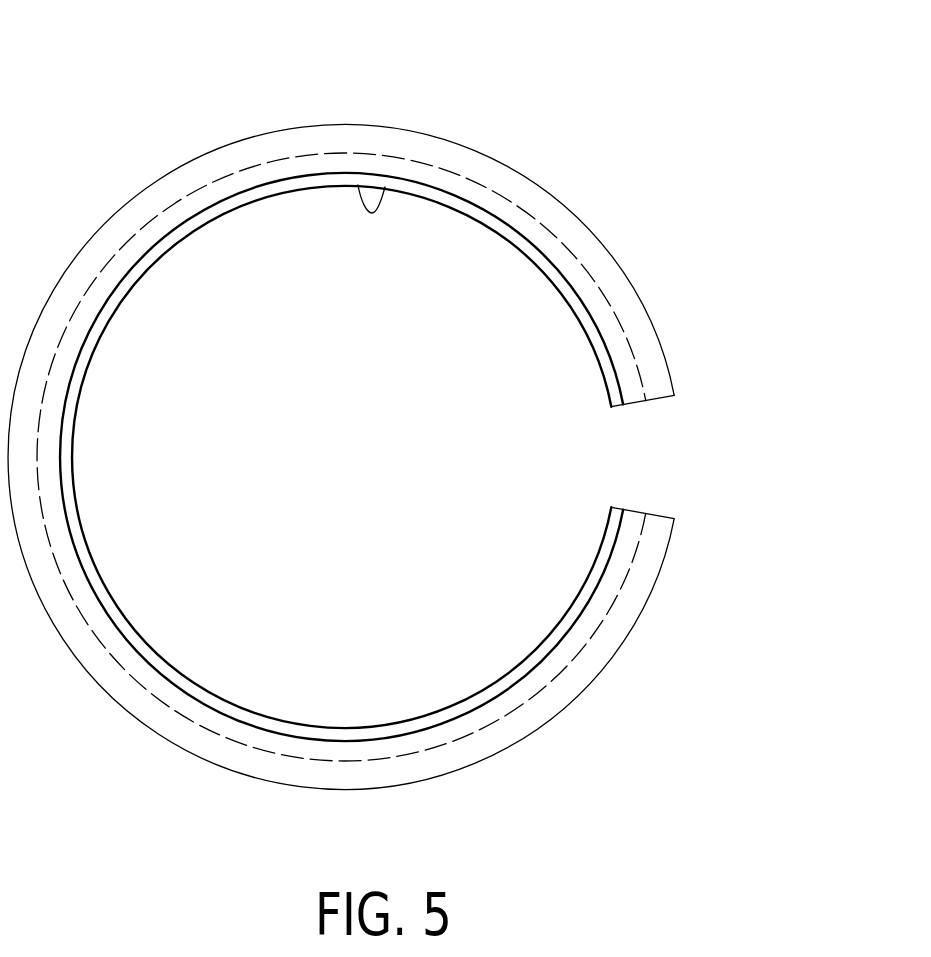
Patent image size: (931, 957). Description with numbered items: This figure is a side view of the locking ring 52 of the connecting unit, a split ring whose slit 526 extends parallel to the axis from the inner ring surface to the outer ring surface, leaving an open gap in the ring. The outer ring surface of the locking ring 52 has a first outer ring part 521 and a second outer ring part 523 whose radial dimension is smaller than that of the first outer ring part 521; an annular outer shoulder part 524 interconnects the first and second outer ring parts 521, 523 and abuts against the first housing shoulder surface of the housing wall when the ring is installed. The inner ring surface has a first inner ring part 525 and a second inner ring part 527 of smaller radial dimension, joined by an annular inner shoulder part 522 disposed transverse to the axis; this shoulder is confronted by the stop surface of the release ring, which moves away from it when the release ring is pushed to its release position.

The locking ring 52 is at (145, 183).
The first outer ring part 521 is at (192, 158).
The annular inner shoulder part 522 is at (443, 192).
The second outer ring part 523 is at (267, 160).
The annular outer shoulder part 524 is at (523, 218).
The first inner ring part 525 is at (330, 172).
The slit 526 is at (637, 448).
The second inner ring part 527 is at (385, 188).